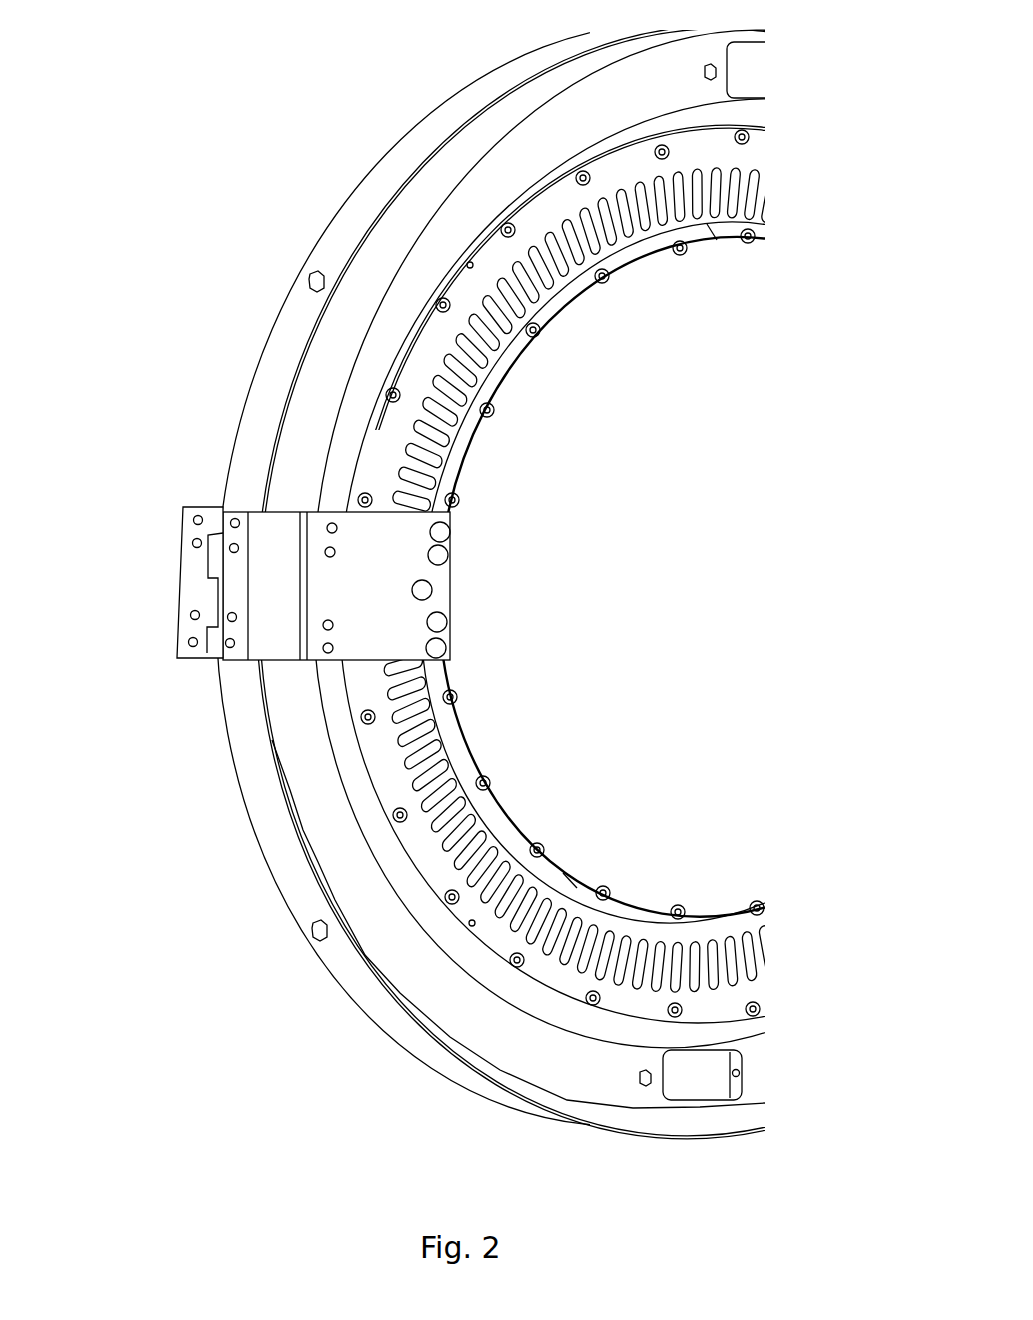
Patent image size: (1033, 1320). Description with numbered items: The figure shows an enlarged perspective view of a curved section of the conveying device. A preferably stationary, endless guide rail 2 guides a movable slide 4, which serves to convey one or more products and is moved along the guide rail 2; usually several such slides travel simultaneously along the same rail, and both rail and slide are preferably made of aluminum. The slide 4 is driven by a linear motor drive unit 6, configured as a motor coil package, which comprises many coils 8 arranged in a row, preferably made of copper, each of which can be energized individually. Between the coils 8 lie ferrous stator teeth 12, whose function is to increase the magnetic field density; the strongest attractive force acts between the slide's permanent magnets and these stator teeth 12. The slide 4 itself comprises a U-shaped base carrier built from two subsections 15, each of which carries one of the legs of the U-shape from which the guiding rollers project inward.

The guide rail 2 is at (282, 823).
The slide 4 is at (192, 580).
The linear motor drive unit 6 is at (527, 759).
The coils 8 is at (500, 280).
The stator teeth 12 is at (468, 258).
The subsections 15 is at (278, 537).